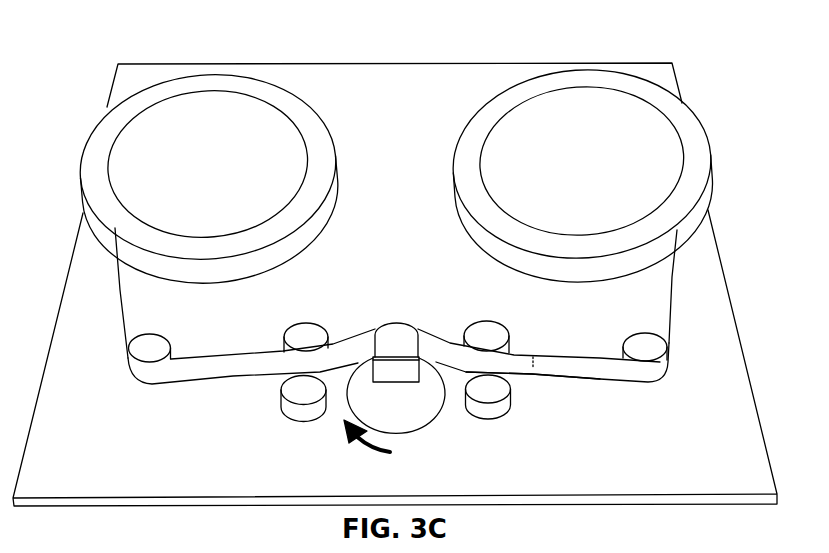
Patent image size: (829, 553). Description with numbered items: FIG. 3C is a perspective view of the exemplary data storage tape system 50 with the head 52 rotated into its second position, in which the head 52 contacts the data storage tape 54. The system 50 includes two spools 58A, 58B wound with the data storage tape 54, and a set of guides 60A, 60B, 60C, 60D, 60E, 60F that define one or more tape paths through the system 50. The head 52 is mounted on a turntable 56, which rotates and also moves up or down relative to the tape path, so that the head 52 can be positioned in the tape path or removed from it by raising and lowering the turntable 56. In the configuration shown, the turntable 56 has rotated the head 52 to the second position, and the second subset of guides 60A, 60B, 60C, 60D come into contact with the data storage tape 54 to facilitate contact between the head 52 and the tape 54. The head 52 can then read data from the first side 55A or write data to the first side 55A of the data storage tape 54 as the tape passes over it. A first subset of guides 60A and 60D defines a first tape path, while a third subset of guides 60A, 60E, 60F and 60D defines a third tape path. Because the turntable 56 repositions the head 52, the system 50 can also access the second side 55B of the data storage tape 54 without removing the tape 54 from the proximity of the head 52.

The data storage tape system 50 is at (694, 56).
The head 52 is at (393, 335).
The data storage tape 54 is at (616, 371).
The first side 55A is at (548, 372).
The second side 55B is at (535, 352).
The turntable 56 is at (427, 418).
The spool 58A is at (306, 118).
The spool 58B is at (489, 118).
The guide 60A is at (147, 338).
The guide 60B is at (305, 329).
The guide 60C is at (486, 329).
The guide 60D is at (645, 337).
The guide 60E is at (302, 418).
The guide 60F is at (486, 418).